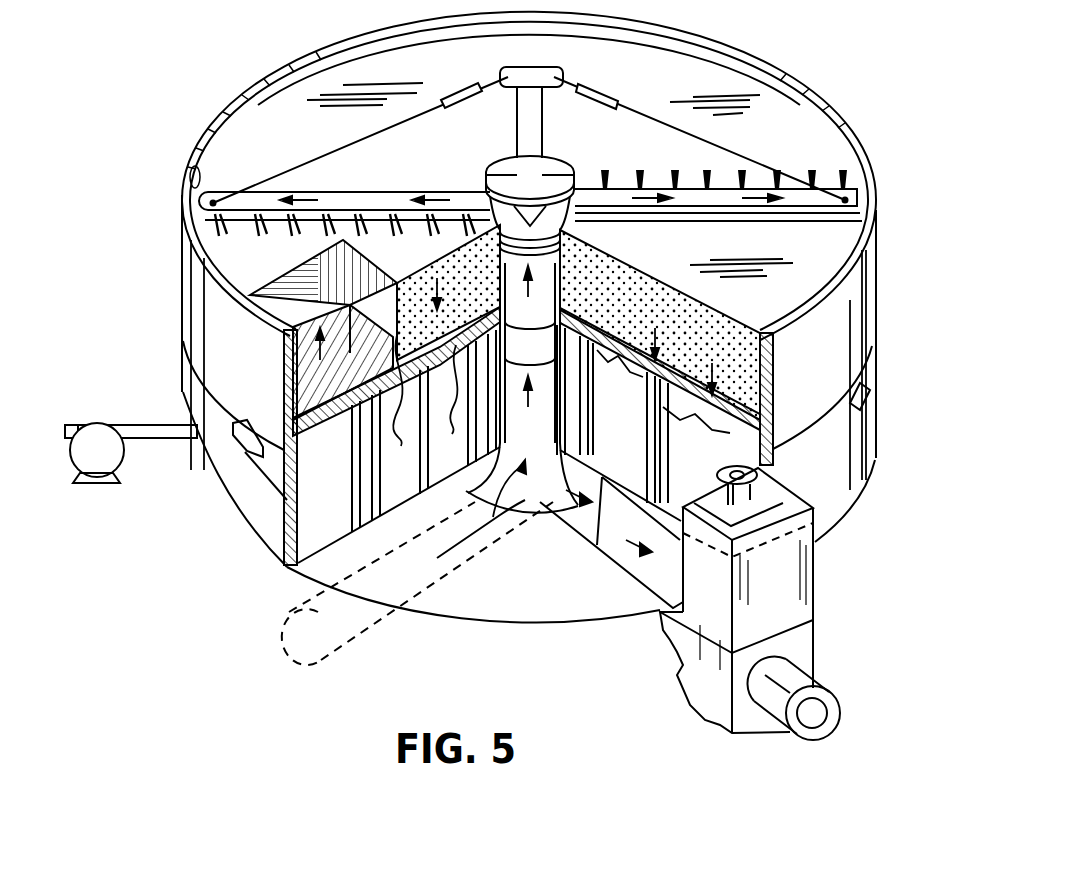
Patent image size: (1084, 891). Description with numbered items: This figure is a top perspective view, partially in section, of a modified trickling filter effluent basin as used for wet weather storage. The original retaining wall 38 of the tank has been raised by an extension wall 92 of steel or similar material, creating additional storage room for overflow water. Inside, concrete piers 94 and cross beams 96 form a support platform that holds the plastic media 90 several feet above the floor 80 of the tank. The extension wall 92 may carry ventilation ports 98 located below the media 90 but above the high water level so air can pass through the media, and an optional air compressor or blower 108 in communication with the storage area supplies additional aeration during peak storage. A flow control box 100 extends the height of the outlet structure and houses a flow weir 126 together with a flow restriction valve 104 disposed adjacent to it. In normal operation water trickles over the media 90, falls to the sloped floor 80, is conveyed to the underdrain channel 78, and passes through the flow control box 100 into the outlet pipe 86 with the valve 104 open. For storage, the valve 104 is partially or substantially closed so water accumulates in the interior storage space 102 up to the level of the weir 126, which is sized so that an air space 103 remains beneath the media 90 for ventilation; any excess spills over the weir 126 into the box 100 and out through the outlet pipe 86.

The retaining wall 38 is at (253, 523).
The underdrain channel 78 is at (607, 537).
The floor 80 is at (495, 598).
The outlet pipe 86 is at (827, 688).
The plastic media 90 is at (287, 292).
The extension wall 92 is at (213, 322).
The piers 94 is at (354, 470).
The cross beams 96 is at (556, 403).
The ventilation ports 98 is at (207, 487).
The flow control box 100 is at (795, 592).
The interior storage space 102 is at (387, 493).
The air space 103 is at (500, 493).
The flow restriction valve 104 is at (757, 473).
The air compressor or blower 108 is at (99, 438).
The flow weir 126 is at (790, 534).